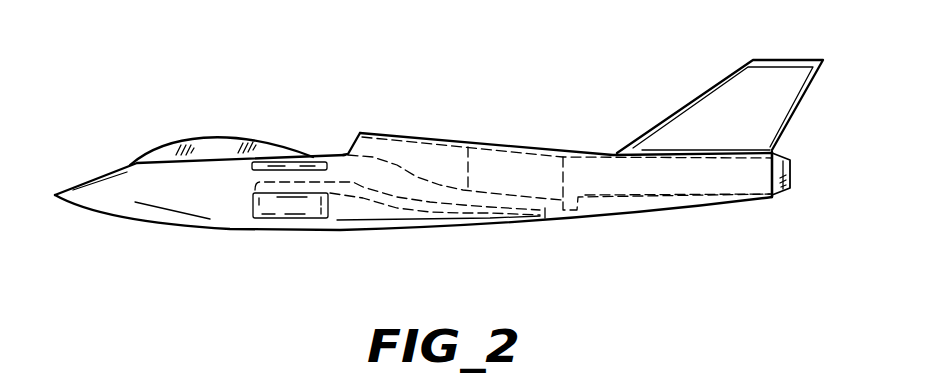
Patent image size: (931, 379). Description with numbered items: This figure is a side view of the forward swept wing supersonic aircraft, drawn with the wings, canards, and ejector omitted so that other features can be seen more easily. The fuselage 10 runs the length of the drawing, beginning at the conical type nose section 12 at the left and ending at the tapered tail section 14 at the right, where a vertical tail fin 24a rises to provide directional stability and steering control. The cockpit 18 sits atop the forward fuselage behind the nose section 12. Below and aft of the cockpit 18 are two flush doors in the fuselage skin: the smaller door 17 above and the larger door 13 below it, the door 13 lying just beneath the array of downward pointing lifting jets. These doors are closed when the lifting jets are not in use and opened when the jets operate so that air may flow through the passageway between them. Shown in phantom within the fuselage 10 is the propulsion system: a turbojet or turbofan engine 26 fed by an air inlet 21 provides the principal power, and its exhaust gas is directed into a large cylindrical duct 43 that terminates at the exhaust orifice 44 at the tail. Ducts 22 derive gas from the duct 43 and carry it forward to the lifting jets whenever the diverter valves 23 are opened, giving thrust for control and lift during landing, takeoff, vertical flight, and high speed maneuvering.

The fuselage 10 is at (353, 218).
The nose section 12 is at (108, 193).
The door 13 is at (258, 217).
The tail section 14 is at (780, 197).
The door 17 is at (288, 167).
The cockpit 18 is at (163, 150).
The air inlet 21 is at (347, 147).
The ducts 22 is at (412, 198).
The diverter valves 23 is at (547, 213).
The vertical tail fin 24a is at (728, 123).
The engine 26 is at (512, 150).
The cylindrical duct 43 is at (613, 197).
The exhaust orifice 44 is at (792, 173).